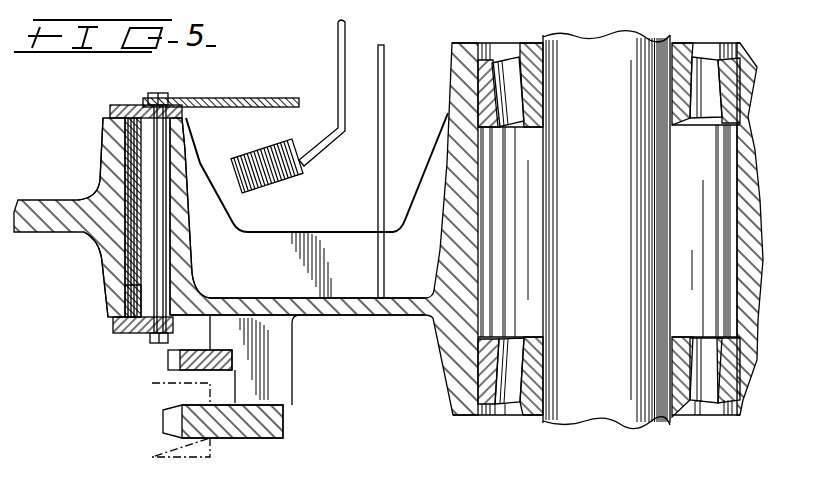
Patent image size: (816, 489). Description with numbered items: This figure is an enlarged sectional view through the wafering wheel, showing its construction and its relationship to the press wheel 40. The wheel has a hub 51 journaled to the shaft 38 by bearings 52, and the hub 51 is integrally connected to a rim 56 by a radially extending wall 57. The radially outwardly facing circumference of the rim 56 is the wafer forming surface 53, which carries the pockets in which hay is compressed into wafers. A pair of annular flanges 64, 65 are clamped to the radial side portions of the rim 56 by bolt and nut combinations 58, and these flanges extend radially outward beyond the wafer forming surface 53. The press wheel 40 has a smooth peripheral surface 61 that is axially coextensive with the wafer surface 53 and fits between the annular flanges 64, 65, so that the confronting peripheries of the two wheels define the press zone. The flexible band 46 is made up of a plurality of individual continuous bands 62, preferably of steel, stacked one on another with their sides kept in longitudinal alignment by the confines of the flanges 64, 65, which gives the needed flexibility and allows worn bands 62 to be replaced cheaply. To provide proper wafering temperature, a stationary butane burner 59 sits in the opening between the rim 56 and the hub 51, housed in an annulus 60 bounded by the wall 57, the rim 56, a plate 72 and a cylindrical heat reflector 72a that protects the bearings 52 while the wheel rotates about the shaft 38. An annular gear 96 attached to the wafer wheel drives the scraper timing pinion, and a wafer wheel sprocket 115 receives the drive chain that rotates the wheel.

The shaft 38 is at (672, 40).
The press wheel 40 is at (47, 212).
The flexible band 46 is at (125, 246).
The hub 51 is at (456, 75).
The bearings 52 is at (519, 46).
The wafer forming surface 53 is at (162, 266).
The rim 56 is at (189, 137).
The radially extending wall 57 is at (272, 303).
The bolt and nut combinations 58 is at (168, 97).
The butane burner 59 is at (281, 152).
The annulus 60 is at (232, 157).
The smooth peripheral surface 61 is at (110, 158).
The individual continuous bands 62 is at (125, 291).
The annular flange 64 is at (128, 329).
The annular flange 65 is at (129, 106).
The plate 72 is at (284, 99).
The heat reflector 72a is at (384, 150).
The annular gear 96 is at (193, 350).
The wafer wheel sprocket 115 is at (254, 428).